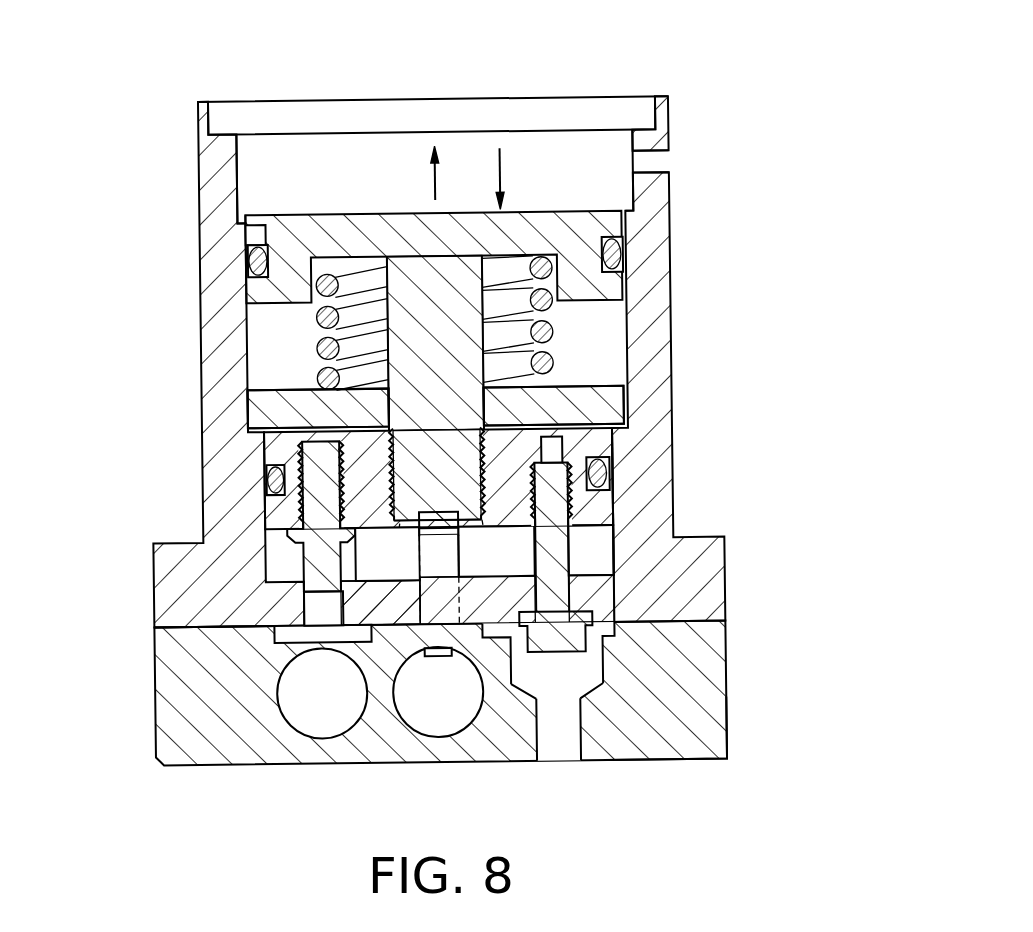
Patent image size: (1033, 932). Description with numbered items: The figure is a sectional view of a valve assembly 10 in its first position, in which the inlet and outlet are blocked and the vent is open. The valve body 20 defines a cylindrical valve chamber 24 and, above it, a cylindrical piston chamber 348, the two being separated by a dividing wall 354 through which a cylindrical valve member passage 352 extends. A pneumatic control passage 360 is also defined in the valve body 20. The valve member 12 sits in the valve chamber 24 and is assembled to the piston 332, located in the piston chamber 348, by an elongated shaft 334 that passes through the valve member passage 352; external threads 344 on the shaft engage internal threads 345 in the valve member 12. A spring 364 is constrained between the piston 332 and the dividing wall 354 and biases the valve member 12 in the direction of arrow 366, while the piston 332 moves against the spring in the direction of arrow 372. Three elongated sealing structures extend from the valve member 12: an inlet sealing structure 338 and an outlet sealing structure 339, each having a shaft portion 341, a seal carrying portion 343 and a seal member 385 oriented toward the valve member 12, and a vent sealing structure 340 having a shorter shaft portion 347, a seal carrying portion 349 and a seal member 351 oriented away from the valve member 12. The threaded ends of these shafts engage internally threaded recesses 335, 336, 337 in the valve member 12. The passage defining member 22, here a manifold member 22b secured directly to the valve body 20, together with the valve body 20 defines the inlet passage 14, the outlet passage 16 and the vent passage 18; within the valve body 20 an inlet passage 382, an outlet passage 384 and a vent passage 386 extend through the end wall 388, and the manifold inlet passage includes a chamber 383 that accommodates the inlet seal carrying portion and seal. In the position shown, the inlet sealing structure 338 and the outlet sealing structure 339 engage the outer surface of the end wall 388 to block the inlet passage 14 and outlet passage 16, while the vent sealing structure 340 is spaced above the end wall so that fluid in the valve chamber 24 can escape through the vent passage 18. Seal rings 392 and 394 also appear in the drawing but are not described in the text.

The valve assembly 10 is at (682, 94).
The valve member 12 is at (272, 441).
The inlet passage 14 is at (548, 746).
The outlet passage 16 is at (430, 710).
The vent passage 18 is at (309, 609).
The valve body 20 is at (647, 393).
The passage defining member 22 is at (697, 661).
The manifold member 22b is at (699, 736).
The valve chamber 24 is at (616, 549).
The piston 332 is at (614, 232).
The elongated shaft 334 is at (435, 312).
The internally threaded recess 335 is at (612, 514).
The internally threaded recess 336 is at (490, 473).
The internally threaded recess 337 is at (334, 478).
The elongated inlet sealing structure 338 is at (580, 600).
The elongated outlet sealing structure 339 is at (430, 653).
The elongated vent sealing structure 340 is at (286, 546).
The shaft portion 341 is at (585, 548).
The seal carrying portion 343 is at (560, 680).
The external threads 344 is at (487, 432).
The internal threads 345 is at (427, 468).
The shaft portion 347 is at (322, 436).
The piston chamber 348 is at (260, 190).
The seal carrying portion 349 is at (266, 506).
The seal member 351 is at (360, 578).
The valve member passage 352 is at (392, 402).
The dividing wall 354 is at (247, 403).
The pneumatic control passage 360 is at (663, 161).
The spring 364 is at (550, 334).
The arrow 366 is at (436, 183).
The arrow 372 is at (503, 182).
The inlet passage 382 is at (527, 593).
The chamber 383 is at (572, 702).
The outlet passage 384 is at (417, 577).
The seal member 385 is at (590, 602).
The vent passage 386 is at (288, 650).
The end wall 388 is at (181, 627).
The upper left seal ring 392 is at (250, 260).
The lower right seal ring 394 is at (612, 470).